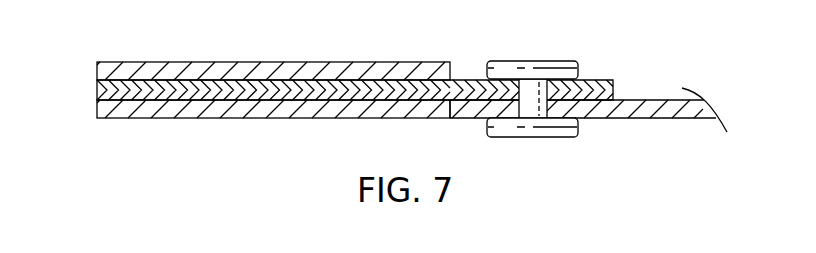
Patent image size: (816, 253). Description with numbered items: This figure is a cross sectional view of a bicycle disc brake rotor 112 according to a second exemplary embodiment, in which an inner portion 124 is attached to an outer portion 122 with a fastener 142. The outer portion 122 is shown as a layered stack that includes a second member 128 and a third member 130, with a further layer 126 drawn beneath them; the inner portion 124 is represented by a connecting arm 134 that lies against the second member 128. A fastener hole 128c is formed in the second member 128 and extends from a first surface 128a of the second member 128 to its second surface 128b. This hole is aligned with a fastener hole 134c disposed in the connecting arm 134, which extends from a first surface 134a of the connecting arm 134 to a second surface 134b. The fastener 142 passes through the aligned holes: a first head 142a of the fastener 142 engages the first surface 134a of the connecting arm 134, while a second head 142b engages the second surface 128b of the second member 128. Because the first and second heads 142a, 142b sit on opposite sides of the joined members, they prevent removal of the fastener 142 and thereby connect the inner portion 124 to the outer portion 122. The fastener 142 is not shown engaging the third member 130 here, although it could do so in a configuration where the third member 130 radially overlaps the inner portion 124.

The bicycle disc brake rotor 112 is at (143, 43).
The outer portion 122 is at (134, 119).
The inner portion 124 is at (648, 119).
The first face sheet 126 is at (97, 107).
The second member 128 is at (97, 90).
The first surface 128a is at (277, 103).
The second surface 128b is at (462, 80).
The fastener hole 128c is at (597, 81).
The third member 130 is at (97, 71).
The connecting arm 134 is at (695, 121).
The first surface 134a is at (600, 118).
The second surface 134b is at (665, 98).
The fastener hole 134c is at (474, 108).
The fastener 142 is at (518, 61).
The first head 142a is at (528, 138).
The second head 142b is at (556, 61).